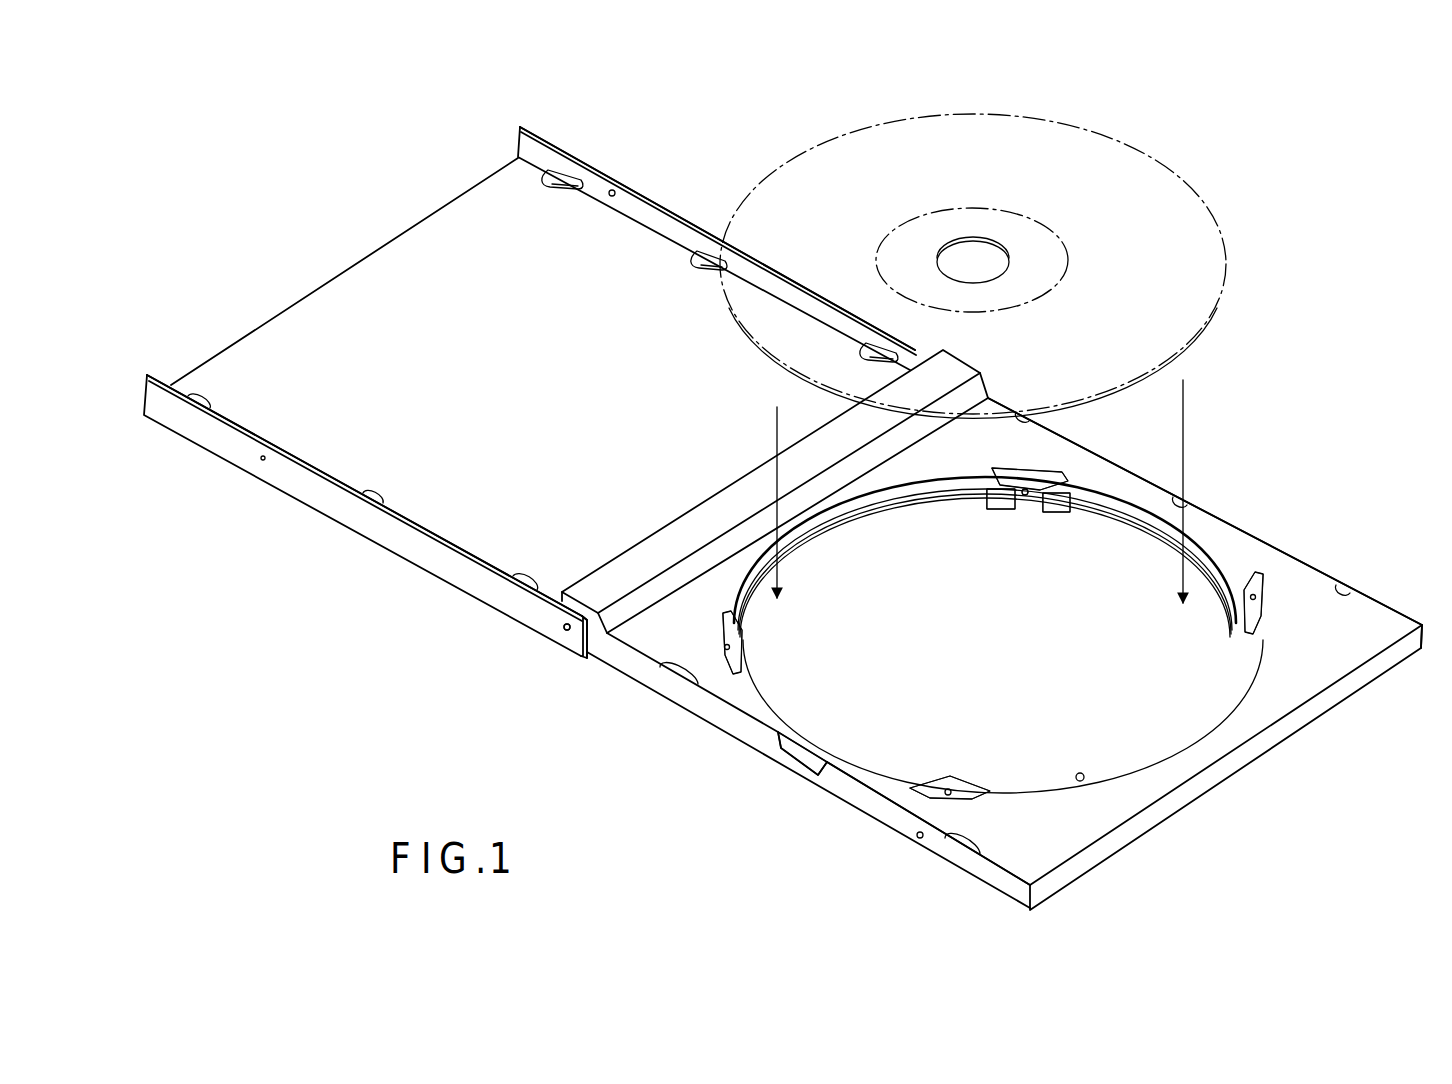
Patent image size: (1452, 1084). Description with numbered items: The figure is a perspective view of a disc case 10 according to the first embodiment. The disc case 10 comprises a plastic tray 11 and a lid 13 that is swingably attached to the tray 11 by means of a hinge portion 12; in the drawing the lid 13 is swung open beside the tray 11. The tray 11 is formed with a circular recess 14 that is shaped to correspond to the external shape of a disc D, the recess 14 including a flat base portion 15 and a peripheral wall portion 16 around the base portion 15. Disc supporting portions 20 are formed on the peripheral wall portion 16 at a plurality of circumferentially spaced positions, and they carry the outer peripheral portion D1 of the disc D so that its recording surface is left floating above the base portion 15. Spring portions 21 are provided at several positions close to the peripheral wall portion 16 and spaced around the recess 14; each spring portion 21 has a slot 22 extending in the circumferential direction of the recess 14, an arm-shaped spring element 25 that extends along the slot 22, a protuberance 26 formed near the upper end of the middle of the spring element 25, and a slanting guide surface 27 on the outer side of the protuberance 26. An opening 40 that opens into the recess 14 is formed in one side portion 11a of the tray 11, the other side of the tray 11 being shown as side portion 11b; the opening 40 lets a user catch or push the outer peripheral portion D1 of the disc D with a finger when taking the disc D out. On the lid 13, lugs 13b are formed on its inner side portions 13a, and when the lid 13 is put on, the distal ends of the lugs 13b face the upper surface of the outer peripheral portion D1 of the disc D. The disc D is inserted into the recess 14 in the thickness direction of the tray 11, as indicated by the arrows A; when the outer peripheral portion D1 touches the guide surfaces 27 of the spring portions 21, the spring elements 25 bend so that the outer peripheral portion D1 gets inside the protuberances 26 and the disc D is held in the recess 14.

The disc case 10 is at (1312, 425).
The tray 11 is at (1222, 530).
The side portion of the tray 11a is at (852, 804).
The side wall of base 11b is at (1314, 570).
The hinge portion 12 is at (572, 632).
The lid 13 is at (372, 270).
The inner side portions of the lid 13a is at (648, 208).
The lugs 13b is at (700, 262).
The circular recess 14 is at (1024, 640).
The flat base portion 15 is at (1140, 742).
The peripheral wall portion 16 is at (1083, 782).
The disc supporting portions 20 is at (827, 536).
The spring portions 21 is at (1068, 462).
The slot 22 is at (1030, 476).
The spring element 25 is at (1048, 508).
The protuberance 26 is at (1025, 506).
The slanting guide surface 27 is at (1000, 496).
The opening 40 is at (794, 762).
The disc D is at (1202, 192).
The outer peripheral portion of the disc D1 is at (1202, 333).
The arrows A is at (774, 442).